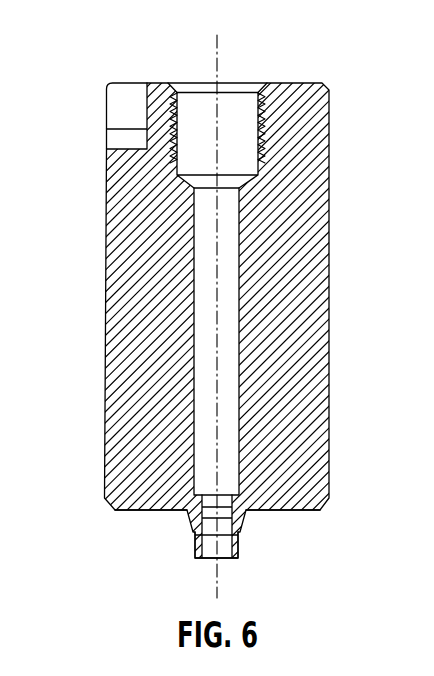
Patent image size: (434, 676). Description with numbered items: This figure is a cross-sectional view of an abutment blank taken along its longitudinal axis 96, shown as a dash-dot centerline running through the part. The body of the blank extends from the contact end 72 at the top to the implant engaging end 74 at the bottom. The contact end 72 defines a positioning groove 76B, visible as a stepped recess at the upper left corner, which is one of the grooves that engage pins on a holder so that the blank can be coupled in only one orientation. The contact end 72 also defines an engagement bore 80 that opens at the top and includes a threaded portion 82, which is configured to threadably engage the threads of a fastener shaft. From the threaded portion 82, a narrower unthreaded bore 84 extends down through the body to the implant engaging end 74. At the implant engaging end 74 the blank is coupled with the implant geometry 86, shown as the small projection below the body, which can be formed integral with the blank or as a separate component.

The contact end 72 is at (287, 83).
The implant engaging end 74 is at (152, 510).
The positioning groove 76B is at (127, 117).
The engagement bore 80 is at (197, 102).
The threaded portion 82 is at (245, 132).
The unthreaded bore 84 is at (207, 307).
The implant geometry 86 is at (237, 545).
The longitudinal axis 96 is at (220, 55).